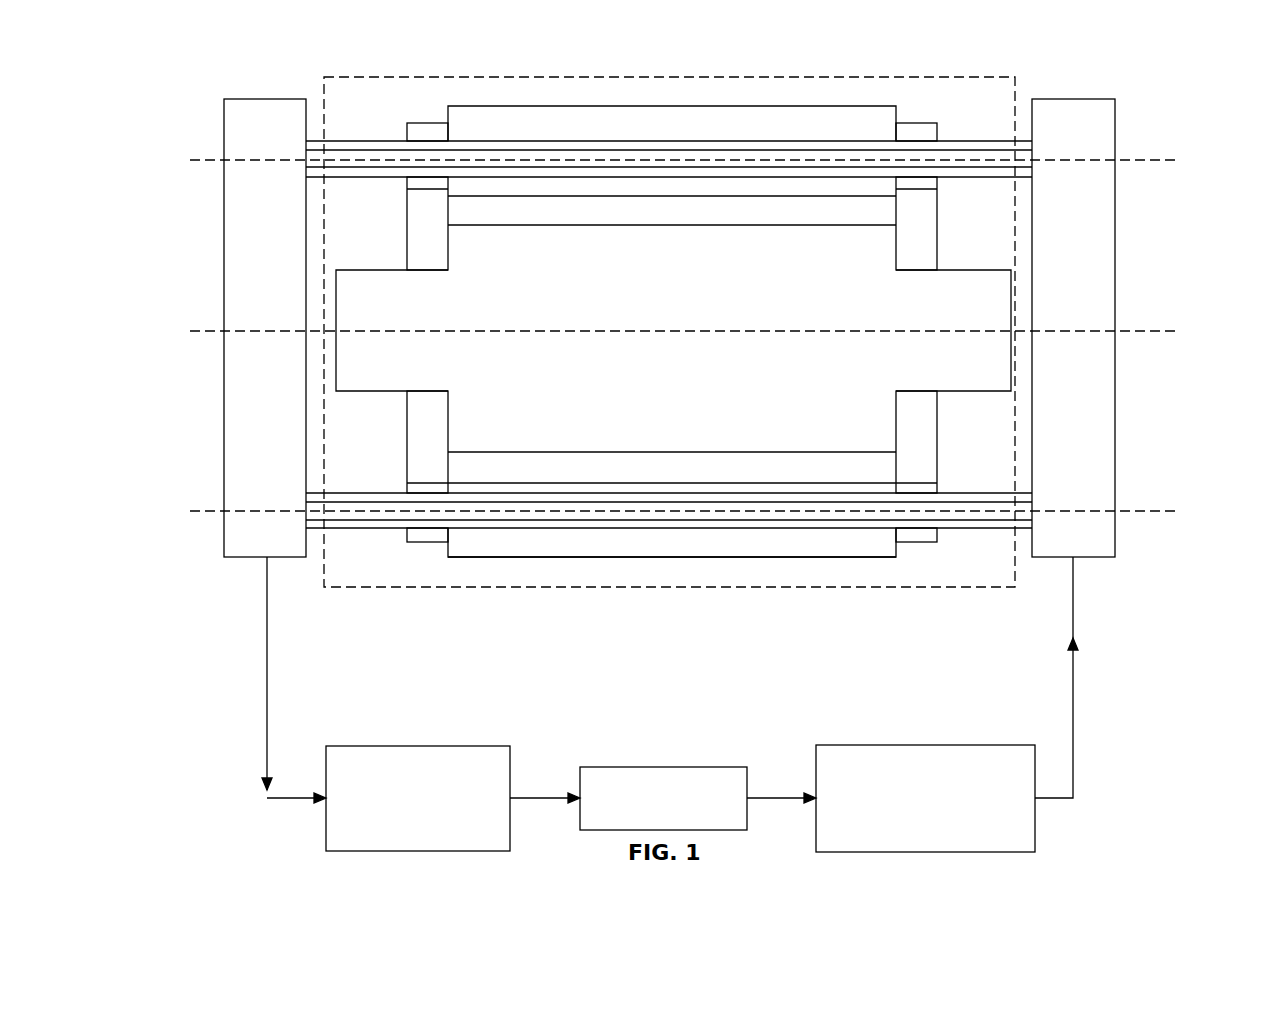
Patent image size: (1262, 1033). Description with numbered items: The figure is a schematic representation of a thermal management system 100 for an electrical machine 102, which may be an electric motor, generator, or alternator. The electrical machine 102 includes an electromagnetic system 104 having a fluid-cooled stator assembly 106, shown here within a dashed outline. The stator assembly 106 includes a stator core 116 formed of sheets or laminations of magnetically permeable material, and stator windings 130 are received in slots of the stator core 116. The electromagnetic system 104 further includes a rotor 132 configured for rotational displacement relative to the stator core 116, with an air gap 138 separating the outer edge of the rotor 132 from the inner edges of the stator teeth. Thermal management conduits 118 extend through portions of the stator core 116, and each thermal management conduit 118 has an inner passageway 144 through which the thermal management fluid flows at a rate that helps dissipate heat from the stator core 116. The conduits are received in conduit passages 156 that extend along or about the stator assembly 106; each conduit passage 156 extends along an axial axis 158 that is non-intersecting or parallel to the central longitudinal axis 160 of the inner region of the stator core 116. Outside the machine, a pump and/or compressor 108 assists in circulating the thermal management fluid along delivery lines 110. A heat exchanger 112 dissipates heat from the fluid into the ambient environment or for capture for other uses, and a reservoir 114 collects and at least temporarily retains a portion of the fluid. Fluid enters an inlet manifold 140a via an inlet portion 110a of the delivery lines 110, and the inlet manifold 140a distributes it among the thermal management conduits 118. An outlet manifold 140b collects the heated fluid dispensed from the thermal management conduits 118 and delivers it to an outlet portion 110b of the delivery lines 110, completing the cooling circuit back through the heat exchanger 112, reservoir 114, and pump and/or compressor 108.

The thermal management system 100 is at (1175, 108).
The electrical machine 102 is at (780, 589).
The electromagnetic system 104 is at (400, 550).
The stator assembly 106 is at (908, 553).
The pump and/or compressor 108 is at (925, 745).
The delivery lines 110 is at (540, 798).
The inlet portion 110a is at (1073, 765).
The outlet portion 110b is at (259, 680).
The heat exchanger 112 is at (417, 746).
The reservoir 114 is at (663, 767).
The stator core 116 is at (510, 540).
The thermal management conduit 118 is at (857, 147).
The stator windings 130 is at (430, 135).
The rotor 132 is at (709, 297).
The air gap 138 is at (670, 215).
The inlet manifold 140a is at (1115, 390).
The outlet manifold 140b is at (224, 403).
The inner passageway 144 is at (542, 167).
The conduit passages 156 is at (847, 183).
The axial axis 158 is at (1160, 163).
The central longitudinal axis 160 is at (1160, 331).